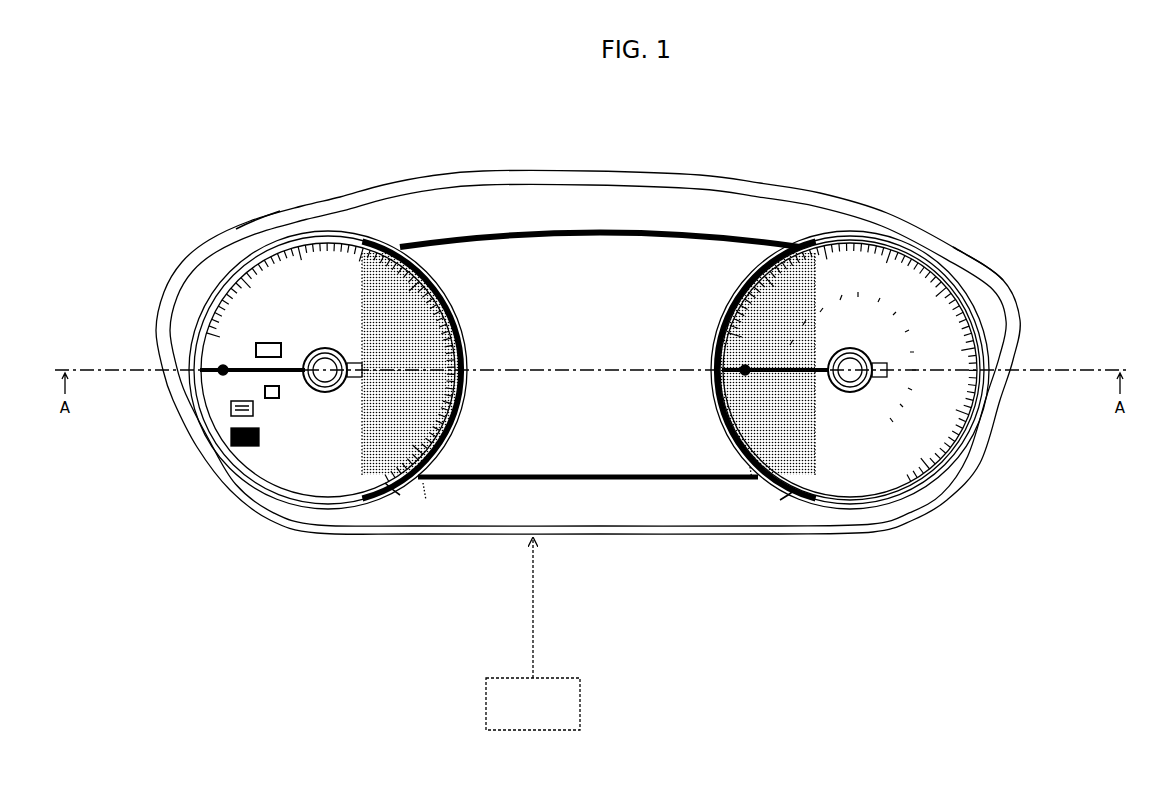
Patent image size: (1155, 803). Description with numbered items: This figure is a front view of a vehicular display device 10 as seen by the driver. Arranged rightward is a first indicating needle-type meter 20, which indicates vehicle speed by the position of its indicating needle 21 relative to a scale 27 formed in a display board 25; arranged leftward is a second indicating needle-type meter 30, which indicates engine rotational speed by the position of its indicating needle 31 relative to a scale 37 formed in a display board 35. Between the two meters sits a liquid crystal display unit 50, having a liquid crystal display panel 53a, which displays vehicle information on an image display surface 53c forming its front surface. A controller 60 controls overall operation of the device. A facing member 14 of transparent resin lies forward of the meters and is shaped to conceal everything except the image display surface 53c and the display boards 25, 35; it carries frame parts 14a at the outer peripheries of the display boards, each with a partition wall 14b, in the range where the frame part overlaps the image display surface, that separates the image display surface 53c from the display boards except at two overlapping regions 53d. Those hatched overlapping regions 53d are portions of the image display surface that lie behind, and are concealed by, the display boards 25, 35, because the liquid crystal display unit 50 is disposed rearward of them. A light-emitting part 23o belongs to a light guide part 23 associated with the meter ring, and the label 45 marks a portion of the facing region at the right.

The vehicular display device 10 is at (872, 123).
The facing member 14 is at (928, 232).
The frame part 14a is at (393, 490).
The partition wall 14b is at (423, 483).
The first indicating needle-type meter 20 is at (803, 382).
The indicating needle 21 is at (793, 392).
The tachometer ring 23 is at (462, 436).
The light-emitting part 23o is at (728, 433).
The display board 25 is at (848, 237).
The scale 27 is at (915, 243).
The second indicating needle-type meter 30 is at (539, 398).
The indicating needle 31 is at (287, 395).
The display board 35 is at (252, 293).
The scale 37 is at (307, 224).
The cover portion 45 is at (965, 280).
The liquid crystal display unit 50 is at (600, 288).
The liquid crystal display panel 53a is at (533, 252).
The image display surface 53c is at (533, 262).
The overlapping region 53d is at (362, 505).
The controller 60 is at (580, 678).